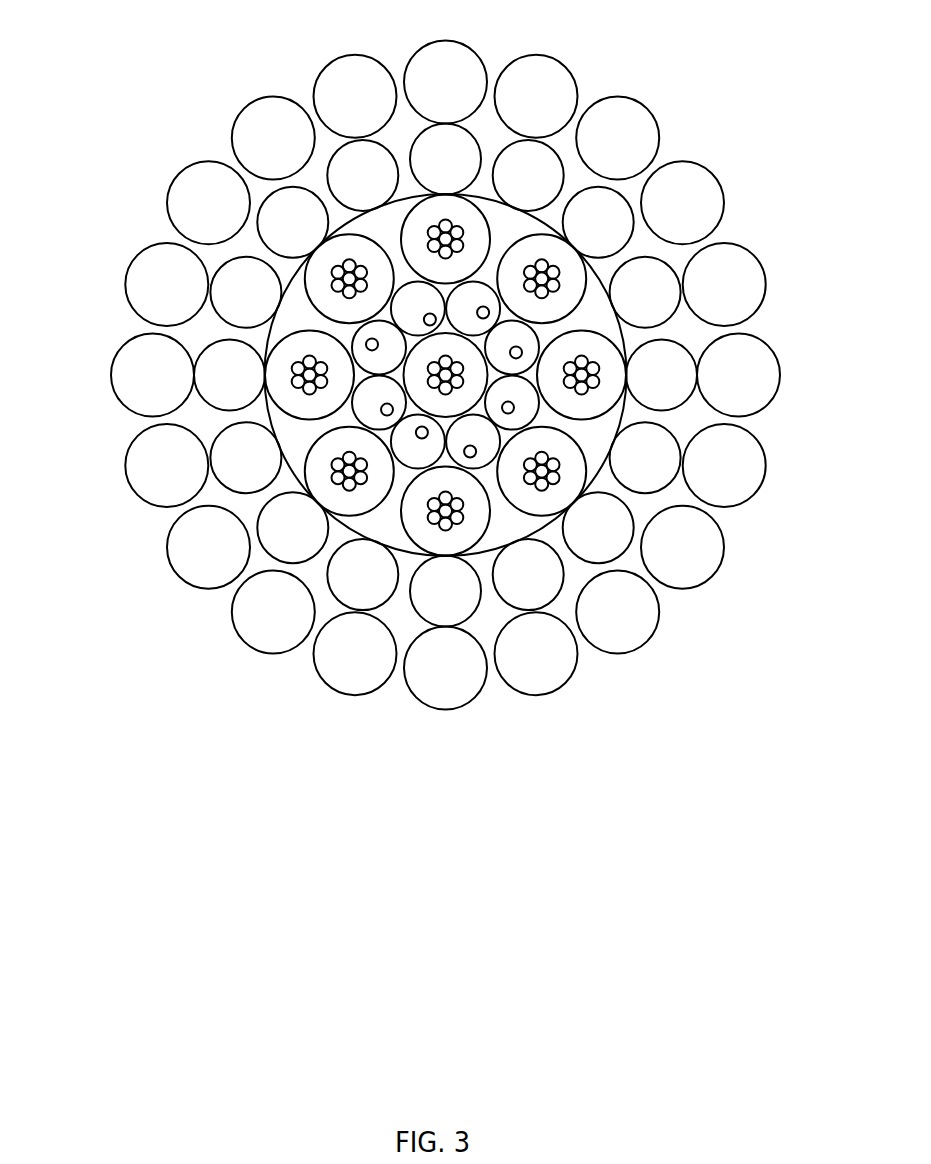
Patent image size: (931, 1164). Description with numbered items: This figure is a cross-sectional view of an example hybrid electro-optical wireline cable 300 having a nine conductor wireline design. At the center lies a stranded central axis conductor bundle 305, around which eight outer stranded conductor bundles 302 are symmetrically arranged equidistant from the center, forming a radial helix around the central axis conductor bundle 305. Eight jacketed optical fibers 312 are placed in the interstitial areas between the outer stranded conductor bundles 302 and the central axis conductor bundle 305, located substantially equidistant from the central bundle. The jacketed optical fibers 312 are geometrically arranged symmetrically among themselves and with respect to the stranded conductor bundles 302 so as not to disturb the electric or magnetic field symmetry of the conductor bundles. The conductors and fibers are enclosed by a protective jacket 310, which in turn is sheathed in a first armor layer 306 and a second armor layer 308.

The wireline cable 300 is at (148, 172).
The outer stranded conductor bundles 302 is at (325, 482).
The stranded central axis conductor bundle 305 is at (475, 383).
The first armor layer 306 is at (223, 377).
The second armor layer 308 is at (158, 284).
The protective jacket 310 is at (413, 200).
The jacketed optical fibers 312 is at (482, 300).